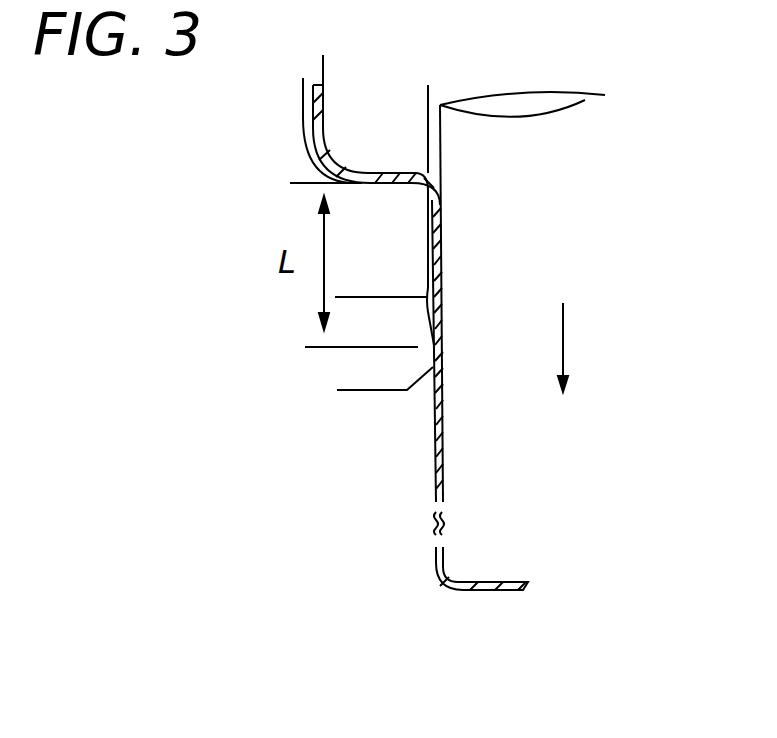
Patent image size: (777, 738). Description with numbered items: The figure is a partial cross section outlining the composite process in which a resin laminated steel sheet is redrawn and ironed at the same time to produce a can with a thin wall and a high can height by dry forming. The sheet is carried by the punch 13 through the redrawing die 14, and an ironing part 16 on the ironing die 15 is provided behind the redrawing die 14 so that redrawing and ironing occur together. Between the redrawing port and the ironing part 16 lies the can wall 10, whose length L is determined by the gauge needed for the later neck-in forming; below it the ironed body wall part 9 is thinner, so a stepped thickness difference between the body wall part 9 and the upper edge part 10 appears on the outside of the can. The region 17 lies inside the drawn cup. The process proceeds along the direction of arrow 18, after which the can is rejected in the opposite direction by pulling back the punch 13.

The body wall part 9 is at (443, 455).
The can wall 10 is at (440, 267).
The punch 13 is at (516, 139).
The redrawing die 14 is at (358, 240).
The ironing die 15 is at (361, 330).
The ironing part 16 is at (426, 349).
The countersink 17 is at (371, 130).
The arrow 18 is at (589, 347).